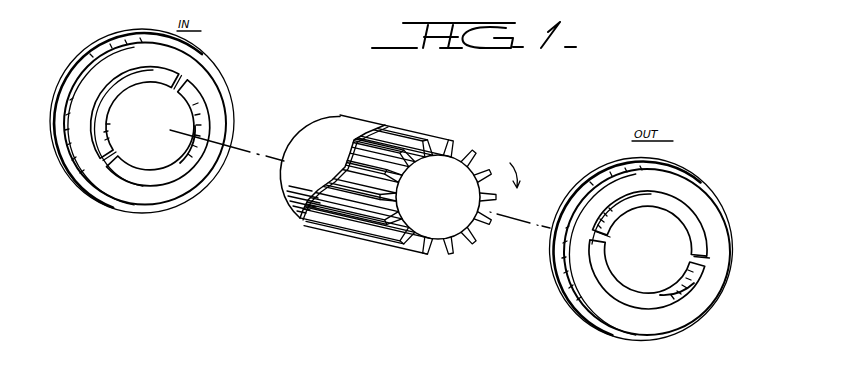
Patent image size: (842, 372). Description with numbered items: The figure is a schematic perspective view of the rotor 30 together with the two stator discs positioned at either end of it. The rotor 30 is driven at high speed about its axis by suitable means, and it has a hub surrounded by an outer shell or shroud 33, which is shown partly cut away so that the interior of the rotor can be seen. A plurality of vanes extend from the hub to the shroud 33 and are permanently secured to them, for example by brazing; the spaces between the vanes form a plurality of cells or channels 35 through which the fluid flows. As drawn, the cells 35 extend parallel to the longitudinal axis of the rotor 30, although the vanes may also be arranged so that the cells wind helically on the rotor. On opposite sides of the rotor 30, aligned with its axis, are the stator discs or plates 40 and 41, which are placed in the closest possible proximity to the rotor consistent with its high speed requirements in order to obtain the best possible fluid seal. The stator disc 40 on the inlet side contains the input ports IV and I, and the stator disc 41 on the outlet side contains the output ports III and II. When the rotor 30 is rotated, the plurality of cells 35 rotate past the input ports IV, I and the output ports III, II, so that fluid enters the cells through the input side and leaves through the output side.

The rotor 30 is at (388, 170).
The outer shell or shroud 33 is at (320, 119).
The cells or channels 35 is at (400, 142).
The stator disc or plate 40 is at (95, 47).
The stator disc or plate 41 is at (594, 176).
The input port I is at (174, 73).
The input port IV is at (137, 183).
The output port II is at (672, 210).
The output port III is at (622, 298).